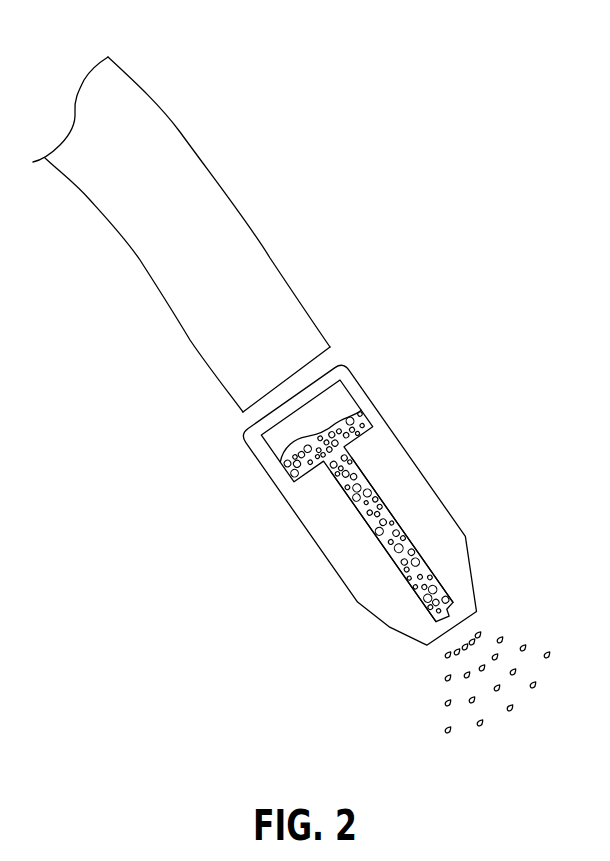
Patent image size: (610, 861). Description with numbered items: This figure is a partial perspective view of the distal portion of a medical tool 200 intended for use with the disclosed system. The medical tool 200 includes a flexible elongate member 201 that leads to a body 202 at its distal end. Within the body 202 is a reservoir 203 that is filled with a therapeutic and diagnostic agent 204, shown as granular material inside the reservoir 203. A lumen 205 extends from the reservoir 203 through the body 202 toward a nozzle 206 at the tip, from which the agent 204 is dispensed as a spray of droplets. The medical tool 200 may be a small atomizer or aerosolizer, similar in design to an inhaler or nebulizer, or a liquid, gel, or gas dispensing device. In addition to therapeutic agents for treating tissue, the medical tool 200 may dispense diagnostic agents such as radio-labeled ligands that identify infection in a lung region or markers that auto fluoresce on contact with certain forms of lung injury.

The medical tool 200 is at (444, 84).
The flexible elongate member 201 is at (225, 186).
The body 202 is at (425, 460).
The reservoir 203 is at (345, 397).
The therapeutic and diagnostic agent 204 is at (287, 446).
The lumen 205 is at (342, 497).
The nozzle 206 is at (472, 632).